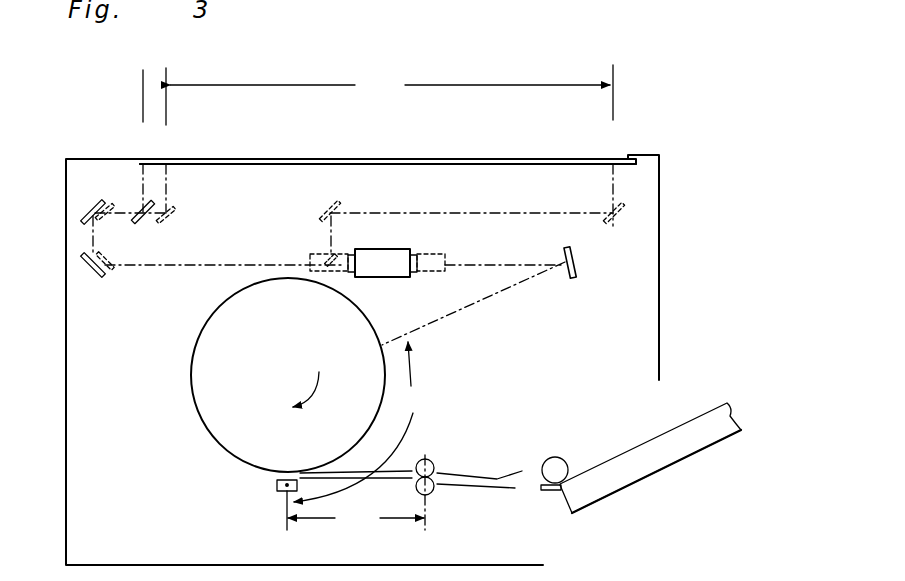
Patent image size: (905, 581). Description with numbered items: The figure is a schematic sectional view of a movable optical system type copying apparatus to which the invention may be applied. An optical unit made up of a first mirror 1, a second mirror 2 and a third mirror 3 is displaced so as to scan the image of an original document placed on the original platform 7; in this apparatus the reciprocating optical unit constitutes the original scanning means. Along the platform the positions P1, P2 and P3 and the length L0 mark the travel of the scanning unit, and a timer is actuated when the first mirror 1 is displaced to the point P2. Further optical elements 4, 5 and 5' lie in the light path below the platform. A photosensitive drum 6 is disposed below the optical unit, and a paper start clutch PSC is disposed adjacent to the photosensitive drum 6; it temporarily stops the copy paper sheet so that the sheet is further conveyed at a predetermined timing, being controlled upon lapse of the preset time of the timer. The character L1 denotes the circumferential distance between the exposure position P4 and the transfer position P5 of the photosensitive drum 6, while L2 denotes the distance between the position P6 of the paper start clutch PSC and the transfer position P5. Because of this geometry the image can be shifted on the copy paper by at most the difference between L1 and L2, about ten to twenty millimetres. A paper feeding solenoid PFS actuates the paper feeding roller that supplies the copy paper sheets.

The first mirror 1 is at (147, 220).
The second mirror 2 is at (93, 204).
The third mirror 3 is at (91, 273).
The mirror 4 is at (577, 265).
The optical unit (lens/modulator) 5 is at (411, 250).
The alternative position of optical unit 5' is at (441, 234).
The photosensitive drum 6 is at (197, 417).
The original platform 7 is at (551, 157).
The position P1 is at (133, 126).
The point P2 is at (169, 126).
The position P3 is at (611, 133).
The exposure position P4 is at (381, 342).
The transfer position P5 is at (282, 521).
The position of the paper start clutch P6 is at (424, 509).
The length L0 is at (390, 85).
The circumferential distance L1 is at (358, 422).
The distance L2 is at (356, 524).
The paper start clutch PSC is at (430, 458).
The paper feeding solenoid PFS is at (562, 456).